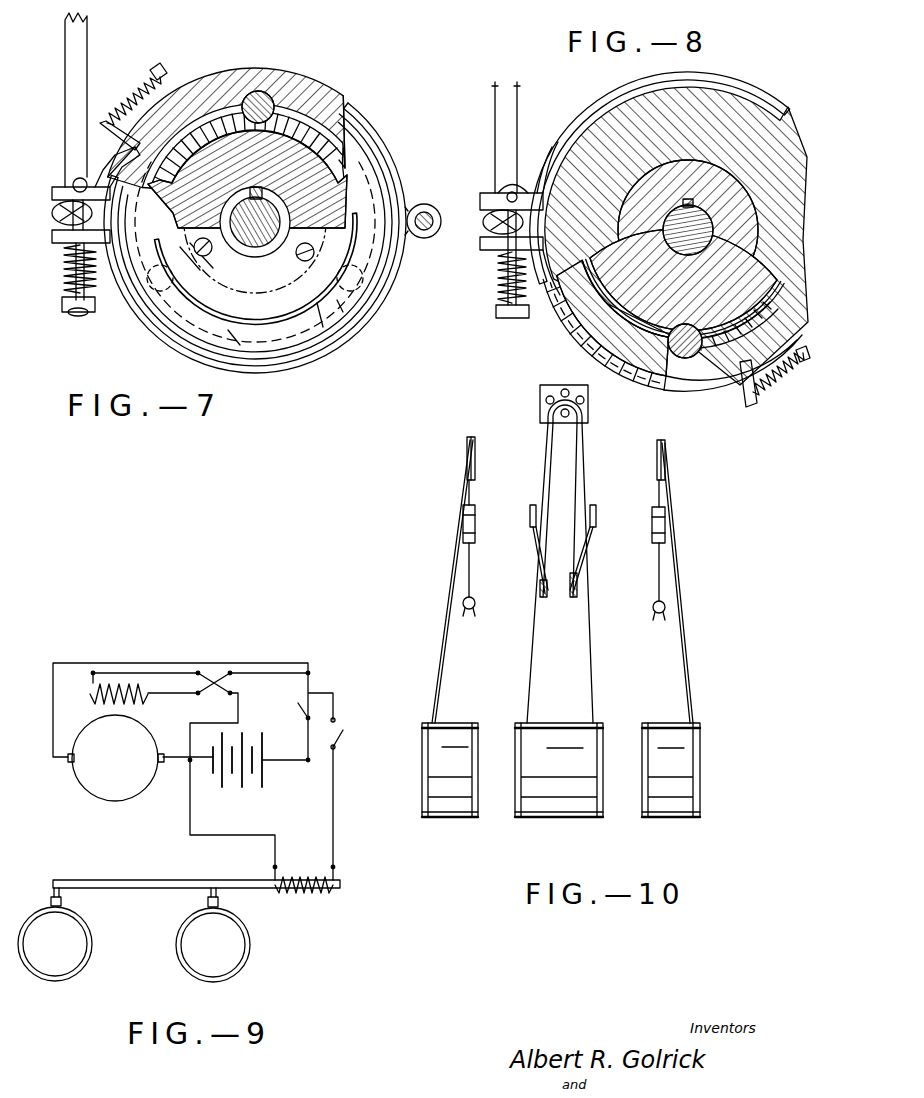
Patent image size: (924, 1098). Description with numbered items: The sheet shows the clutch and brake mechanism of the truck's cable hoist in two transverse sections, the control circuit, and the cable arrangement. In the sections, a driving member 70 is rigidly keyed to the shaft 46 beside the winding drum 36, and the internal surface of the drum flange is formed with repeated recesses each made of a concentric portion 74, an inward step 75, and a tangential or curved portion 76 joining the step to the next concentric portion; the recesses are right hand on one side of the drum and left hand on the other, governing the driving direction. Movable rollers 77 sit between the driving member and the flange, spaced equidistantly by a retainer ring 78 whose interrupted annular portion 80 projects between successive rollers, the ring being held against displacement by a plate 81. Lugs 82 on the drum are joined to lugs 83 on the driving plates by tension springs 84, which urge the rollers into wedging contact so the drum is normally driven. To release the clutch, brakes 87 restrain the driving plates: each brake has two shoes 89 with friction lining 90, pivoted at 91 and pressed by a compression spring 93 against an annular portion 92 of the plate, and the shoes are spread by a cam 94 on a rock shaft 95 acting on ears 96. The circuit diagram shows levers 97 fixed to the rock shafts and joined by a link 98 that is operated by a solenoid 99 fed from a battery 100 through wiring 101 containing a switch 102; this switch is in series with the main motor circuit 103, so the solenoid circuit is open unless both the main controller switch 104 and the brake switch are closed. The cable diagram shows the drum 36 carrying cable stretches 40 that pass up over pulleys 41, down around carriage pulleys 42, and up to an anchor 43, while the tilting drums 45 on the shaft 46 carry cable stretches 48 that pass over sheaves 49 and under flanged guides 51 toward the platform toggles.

In FIG. 10, the winding drum 36 is at (548, 735).
In FIG. 10, the cable stretches 40 is at (589, 672).
In FIG. 10, the pulleys 41 is at (530, 514).
In FIG. 10, the pulleys 42 is at (562, 598).
In FIG. 10, the anchor 43 is at (588, 408).
In FIG. 10, the drums 45 is at (454, 735).
In FIG. 7, the shaft 46 is at (248, 245).
In FIG. 8, the shaft 46 is at (607, 287).
In FIG. 10, the cable stretches 48 is at (446, 648).
In FIG. 10, the sheaves 49 is at (475, 455).
In FIG. 10, the flanged guides or sheaves 51 is at (476, 516).
In FIG. 7, the driving member 70 is at (337, 177).
In FIG. 8, the driving member 70 is at (748, 135).
In FIG. 7, the concentric portion 74 is at (222, 100).
In FIG. 7, the inward step 75 is at (247, 92).
In FIG. 8, the inward step 75 is at (670, 372).
In FIG. 7, the tangential or curved portion 76 is at (290, 100).
In FIG. 8, the tangential or curved portion 76 is at (676, 236).
In FIG. 7, the rollers 77 is at (266, 95).
In FIG. 8, the rollers 77 is at (700, 358).
In FIG. 7, the retainer ring 78 is at (292, 332).
In FIG. 8, the retainer ring 78 is at (723, 173).
In FIG. 7, the interrupted annular portion 80 is at (345, 100).
In FIG. 8, the interrupted annular portion 80 is at (610, 310).
In FIG. 7, the plate 81 is at (206, 257).
In FIG. 7, the lugs 82 is at (160, 66).
In FIG. 8, the lugs 82 is at (803, 364).
In FIG. 7, the lugs 83 is at (102, 120).
In FIG. 8, the lugs 83 is at (752, 408).
In FIG. 7, the tension springs 84 is at (133, 78).
In FIG. 8, the tension springs 84 is at (765, 396).
In FIG. 7, the brakes 87 is at (393, 297).
In FIG. 9, the brakes 87 is at (93, 935).
In FIG. 7, the shoes 89 is at (400, 162).
In FIG. 8, the shoes 89 is at (604, 84).
In FIG. 7, the brake or friction lining 90 is at (405, 190).
In FIG. 8, the brake or friction lining 90 is at (582, 122).
In FIG. 7, the pivot 91 is at (435, 216).
In FIG. 7, the annular portion 92 is at (383, 307).
In FIG. 7, the compression spring 93 is at (72, 287).
In FIG. 8, the cam 94 is at (490, 228).
In FIG. 8, the rock shaft 95 is at (504, 238).
In FIG. 8, the lugs or ears 96 is at (487, 192).
In FIG. 7, the levers 97 is at (87, 36).
In FIG. 8, the levers 97 is at (518, 92).
In FIG. 9, the levers 97 is at (62, 900).
In FIG. 9, the link 98 is at (148, 880).
In FIG. 9, the solenoid 99 is at (323, 895).
In FIG. 9, the battery 100 is at (264, 773).
In FIG. 9, the wiring 101 is at (335, 807).
In FIG. 9, the switch 102 is at (343, 735).
In FIG. 9, the main motor circuit 103 is at (307, 745).
In FIG. 9, the main controller switch 104 is at (298, 703).